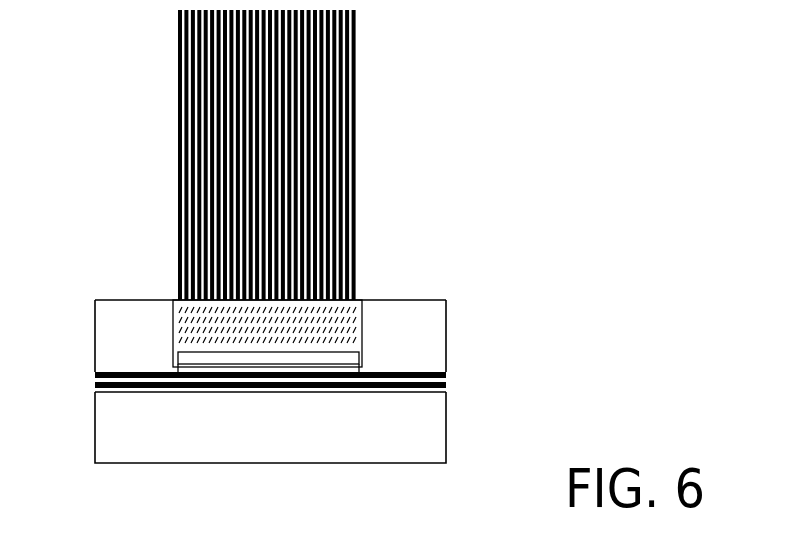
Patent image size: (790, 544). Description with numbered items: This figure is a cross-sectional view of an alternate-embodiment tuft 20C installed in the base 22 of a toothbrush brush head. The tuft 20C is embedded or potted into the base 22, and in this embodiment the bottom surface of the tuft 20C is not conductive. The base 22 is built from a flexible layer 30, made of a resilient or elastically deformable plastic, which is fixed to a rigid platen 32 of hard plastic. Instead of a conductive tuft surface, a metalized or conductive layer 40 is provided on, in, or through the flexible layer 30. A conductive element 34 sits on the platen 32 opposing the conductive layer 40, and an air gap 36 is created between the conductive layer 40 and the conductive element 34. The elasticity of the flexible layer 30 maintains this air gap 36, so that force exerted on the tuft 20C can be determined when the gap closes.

The tuft 20C is at (133, 74).
The base 22 is at (417, 299).
The flexible layer 30 is at (440, 333).
The conductive layer 40 is at (133, 372).
The air gap 36 is at (290, 384).
The conductive element 34 is at (368, 394).
The platen 32 is at (446, 435).